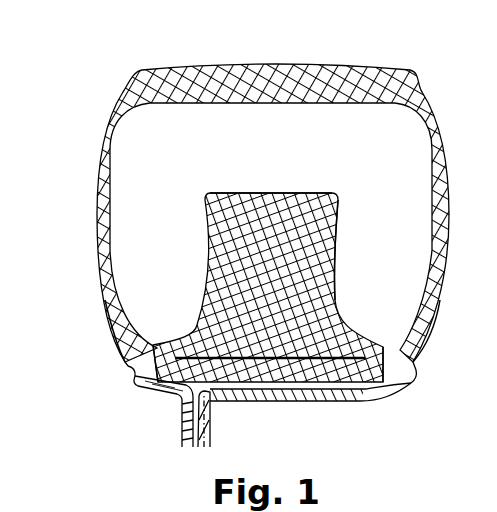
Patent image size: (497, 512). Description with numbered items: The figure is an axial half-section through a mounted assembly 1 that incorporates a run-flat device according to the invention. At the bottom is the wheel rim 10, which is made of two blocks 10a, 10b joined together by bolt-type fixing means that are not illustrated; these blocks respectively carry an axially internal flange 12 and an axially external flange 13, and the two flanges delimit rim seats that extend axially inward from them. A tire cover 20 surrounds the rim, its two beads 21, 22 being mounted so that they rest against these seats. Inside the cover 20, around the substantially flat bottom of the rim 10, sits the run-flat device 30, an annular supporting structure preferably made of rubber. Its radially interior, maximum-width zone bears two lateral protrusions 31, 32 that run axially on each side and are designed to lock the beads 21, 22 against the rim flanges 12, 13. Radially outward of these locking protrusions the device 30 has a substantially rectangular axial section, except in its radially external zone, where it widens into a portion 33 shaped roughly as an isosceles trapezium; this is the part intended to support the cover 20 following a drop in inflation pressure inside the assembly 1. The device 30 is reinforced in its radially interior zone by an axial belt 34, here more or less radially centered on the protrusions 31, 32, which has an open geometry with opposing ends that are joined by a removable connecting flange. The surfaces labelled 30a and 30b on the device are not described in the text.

The mounted assembly 1 is at (50, 417).
The wheel rim 10 is at (272, 411).
The rim block 10a is at (162, 400).
The rim block 10b is at (283, 402).
The axially internal rim flange 12 is at (417, 372).
The axially external rim flange 13 is at (128, 366).
The tire cover 20 is at (410, 62).
The bead 21 is at (428, 343).
The bead 22 is at (125, 345).
The run-flat device 30 is at (322, 178).
The hub top surface 30a is at (237, 192).
The hub stem 30b is at (210, 397).
The lateral protrusion 31 is at (178, 341).
The lateral protrusion 32 is at (379, 346).
The trapezium-shaped portion 33 is at (340, 215).
The axial belt 34 is at (332, 355).